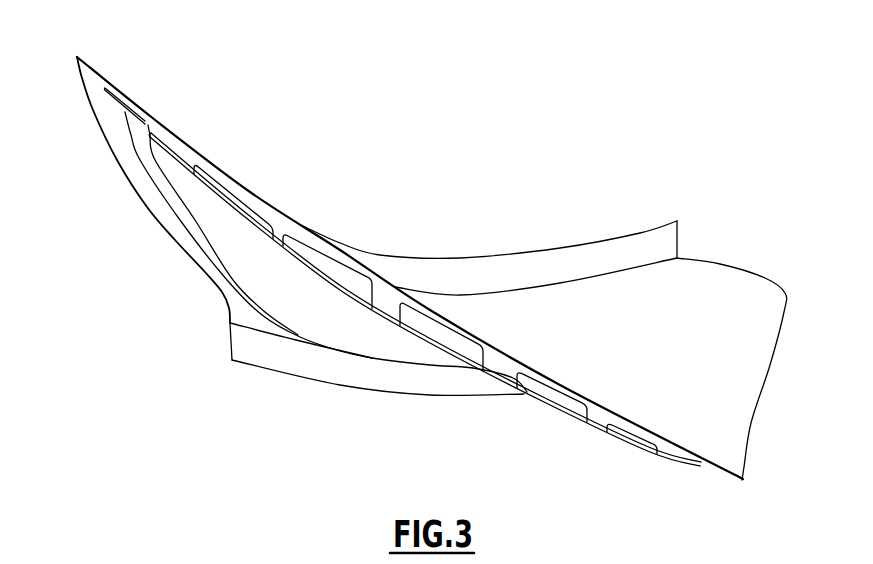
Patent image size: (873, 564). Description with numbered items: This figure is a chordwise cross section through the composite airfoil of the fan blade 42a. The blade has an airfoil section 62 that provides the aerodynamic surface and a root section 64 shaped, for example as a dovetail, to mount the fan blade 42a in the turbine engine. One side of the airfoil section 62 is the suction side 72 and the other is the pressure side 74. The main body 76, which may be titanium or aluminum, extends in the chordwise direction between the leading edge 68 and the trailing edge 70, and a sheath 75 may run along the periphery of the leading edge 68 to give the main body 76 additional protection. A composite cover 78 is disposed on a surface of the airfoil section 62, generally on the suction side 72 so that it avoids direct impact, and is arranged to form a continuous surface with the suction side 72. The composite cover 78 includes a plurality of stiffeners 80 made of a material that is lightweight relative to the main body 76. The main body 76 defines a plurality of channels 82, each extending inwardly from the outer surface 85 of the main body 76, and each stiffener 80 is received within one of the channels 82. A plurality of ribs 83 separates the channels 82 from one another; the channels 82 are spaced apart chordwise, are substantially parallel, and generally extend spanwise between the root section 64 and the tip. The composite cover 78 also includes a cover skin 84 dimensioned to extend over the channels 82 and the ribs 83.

The fan blade 42a is at (686, 86).
The airfoil section 62 is at (122, 212).
The root section 64 is at (218, 348).
The leading edge 68 is at (77, 57).
The trailing edge 70 is at (780, 348).
The suction side 72 is at (718, 472).
The pressure side 74 is at (743, 293).
The sheath 75 is at (90, 100).
The main body 76 is at (187, 158).
The composite cover 78 is at (160, 274).
The stiffeners 80 is at (235, 195).
The channels 82 is at (263, 222).
The ribs 83 is at (373, 330).
The cover skin 84 is at (689, 460).
The outer surface 85 is at (137, 124).